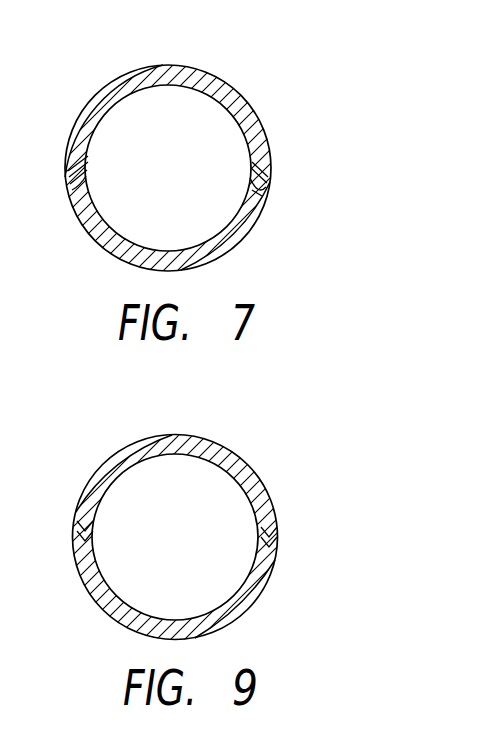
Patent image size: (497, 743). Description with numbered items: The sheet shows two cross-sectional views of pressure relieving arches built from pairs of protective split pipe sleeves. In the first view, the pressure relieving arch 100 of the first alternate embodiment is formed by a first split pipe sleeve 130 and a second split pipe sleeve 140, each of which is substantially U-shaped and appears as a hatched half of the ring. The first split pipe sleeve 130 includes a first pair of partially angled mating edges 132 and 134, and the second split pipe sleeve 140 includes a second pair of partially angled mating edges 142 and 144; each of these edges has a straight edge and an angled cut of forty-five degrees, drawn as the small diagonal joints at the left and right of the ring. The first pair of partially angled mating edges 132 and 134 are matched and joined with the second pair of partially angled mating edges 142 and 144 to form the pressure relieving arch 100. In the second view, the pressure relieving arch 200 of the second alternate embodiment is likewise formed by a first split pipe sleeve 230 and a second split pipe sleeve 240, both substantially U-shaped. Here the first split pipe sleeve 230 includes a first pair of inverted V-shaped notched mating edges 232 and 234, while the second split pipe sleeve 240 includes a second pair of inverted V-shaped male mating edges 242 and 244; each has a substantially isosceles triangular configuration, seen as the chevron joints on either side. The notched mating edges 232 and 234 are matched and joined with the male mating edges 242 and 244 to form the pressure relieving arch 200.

In FIG. 7, the pressure relieving arch 100 is at (242, 70).
In FIG. 7, the first split pipe sleeve 130 is at (178, 60).
In FIG. 7, the partially angled mating edge 132 is at (69, 191).
In FIG. 7, the partially angled mating edge 134 is at (269, 192).
In FIG. 7, the second split pipe sleeve 140 is at (113, 267).
In FIG. 7, the partially angled mating edge 142 is at (88, 153).
In FIG. 7, the partially angled mating edge 144 is at (252, 163).
In FIG. 9, the pressure relieving arch 200 is at (346, 476).
In FIG. 9, the first split pipe sleeve 230 is at (238, 441).
In FIG. 9, the inverted V-shaped notched mating edge 232 is at (92, 545).
In FIG. 9, the inverted V-shaped notched mating edge 234 is at (257, 552).
In FIG. 9, the second split pipe sleeve 240 is at (106, 626).
In FIG. 9, the inverted V-shaped male mating edge 242 is at (78, 512).
In FIG. 9, the inverted V-shaped male mating edge 244 is at (277, 528).